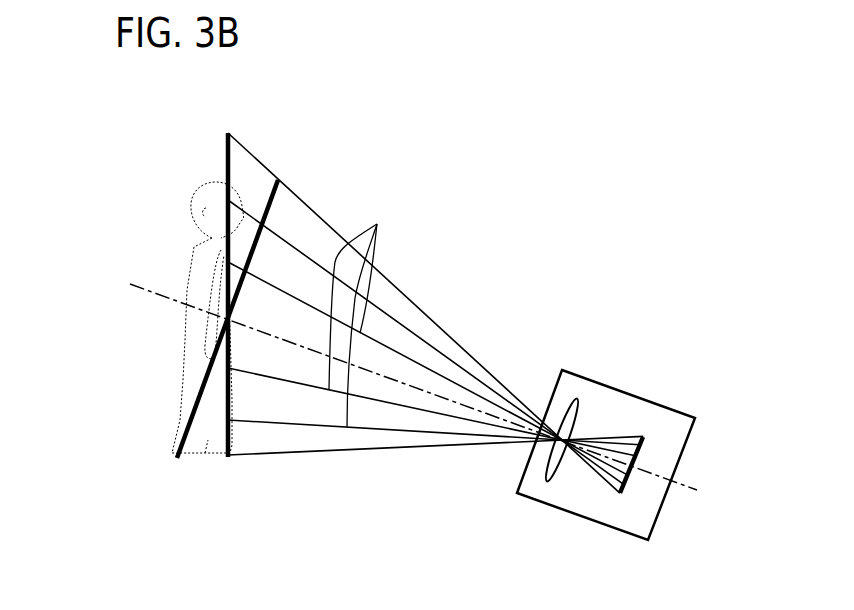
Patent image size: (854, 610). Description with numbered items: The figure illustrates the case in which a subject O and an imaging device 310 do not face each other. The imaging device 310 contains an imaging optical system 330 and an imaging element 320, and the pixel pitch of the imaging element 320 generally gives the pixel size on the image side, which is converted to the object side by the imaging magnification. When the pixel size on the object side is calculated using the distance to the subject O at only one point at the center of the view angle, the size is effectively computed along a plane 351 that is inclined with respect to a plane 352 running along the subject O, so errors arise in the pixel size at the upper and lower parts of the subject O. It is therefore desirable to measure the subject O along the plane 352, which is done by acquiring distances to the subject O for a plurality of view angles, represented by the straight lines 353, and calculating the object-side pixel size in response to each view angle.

The imaging device 310 is at (633, 392).
The imaging element 320 is at (643, 452).
The imaging optical system 330 is at (578, 397).
The plane 351 is at (177, 453).
The plane 352 is at (228, 168).
The straight lines 353 is at (364, 312).
The subject O is at (190, 226).